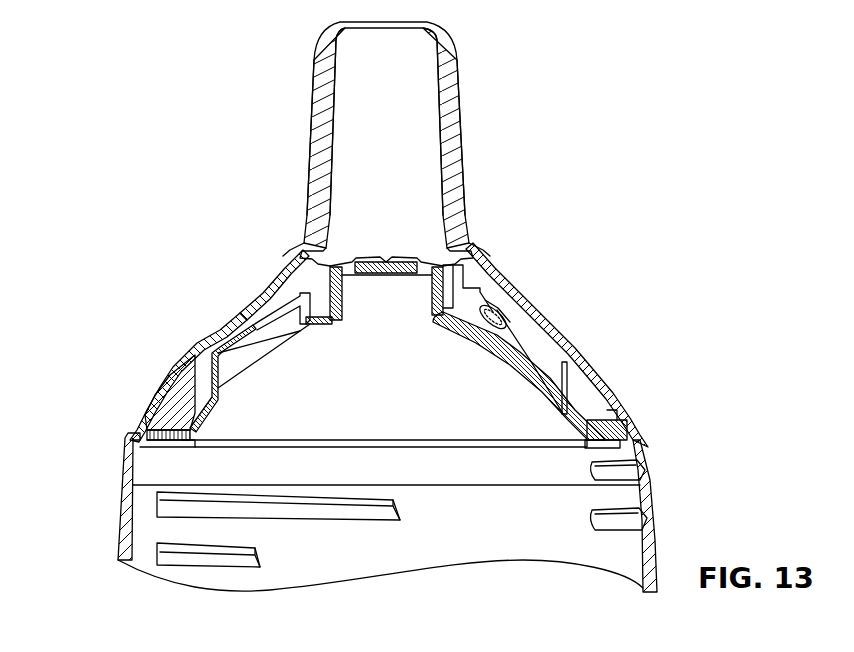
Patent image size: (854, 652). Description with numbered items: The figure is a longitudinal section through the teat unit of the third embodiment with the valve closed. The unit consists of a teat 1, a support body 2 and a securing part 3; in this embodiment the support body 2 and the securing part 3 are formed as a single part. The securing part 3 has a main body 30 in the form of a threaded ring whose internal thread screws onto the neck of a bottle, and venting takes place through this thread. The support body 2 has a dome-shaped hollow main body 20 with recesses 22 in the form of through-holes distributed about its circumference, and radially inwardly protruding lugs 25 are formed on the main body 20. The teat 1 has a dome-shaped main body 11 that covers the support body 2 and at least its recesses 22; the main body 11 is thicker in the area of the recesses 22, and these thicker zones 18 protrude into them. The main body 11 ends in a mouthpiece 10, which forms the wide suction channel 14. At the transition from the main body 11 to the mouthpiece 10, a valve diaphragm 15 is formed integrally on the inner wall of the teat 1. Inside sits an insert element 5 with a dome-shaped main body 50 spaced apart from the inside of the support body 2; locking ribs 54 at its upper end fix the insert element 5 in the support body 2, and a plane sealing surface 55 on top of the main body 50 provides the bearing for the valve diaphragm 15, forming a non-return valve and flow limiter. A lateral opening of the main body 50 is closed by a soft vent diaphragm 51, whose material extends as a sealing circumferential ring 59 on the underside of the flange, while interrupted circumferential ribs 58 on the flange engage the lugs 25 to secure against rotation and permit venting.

The teat 1 is at (294, 91).
The support body 2 is at (163, 417).
The securing part 3 is at (113, 523).
The insert element 5 is at (527, 370).
The mouthpiece 10 is at (448, 124).
The main body 11 is at (205, 336).
The suction channel 14 is at (402, 109).
The valve diaphragm 15 is at (372, 250).
The thicker zones 18 is at (583, 354).
The main body 20 is at (283, 281).
The recesses 22 is at (520, 323).
The lug 25 is at (177, 400).
The main body 30 is at (133, 486).
The main body 50 is at (525, 355).
The vent diaphragm 51 is at (253, 327).
The locking ribs 54 is at (442, 287).
The sealing surface 55 is at (392, 260).
The circumferential ribs 58 is at (610, 423).
The circumferential ring 59 is at (165, 441).